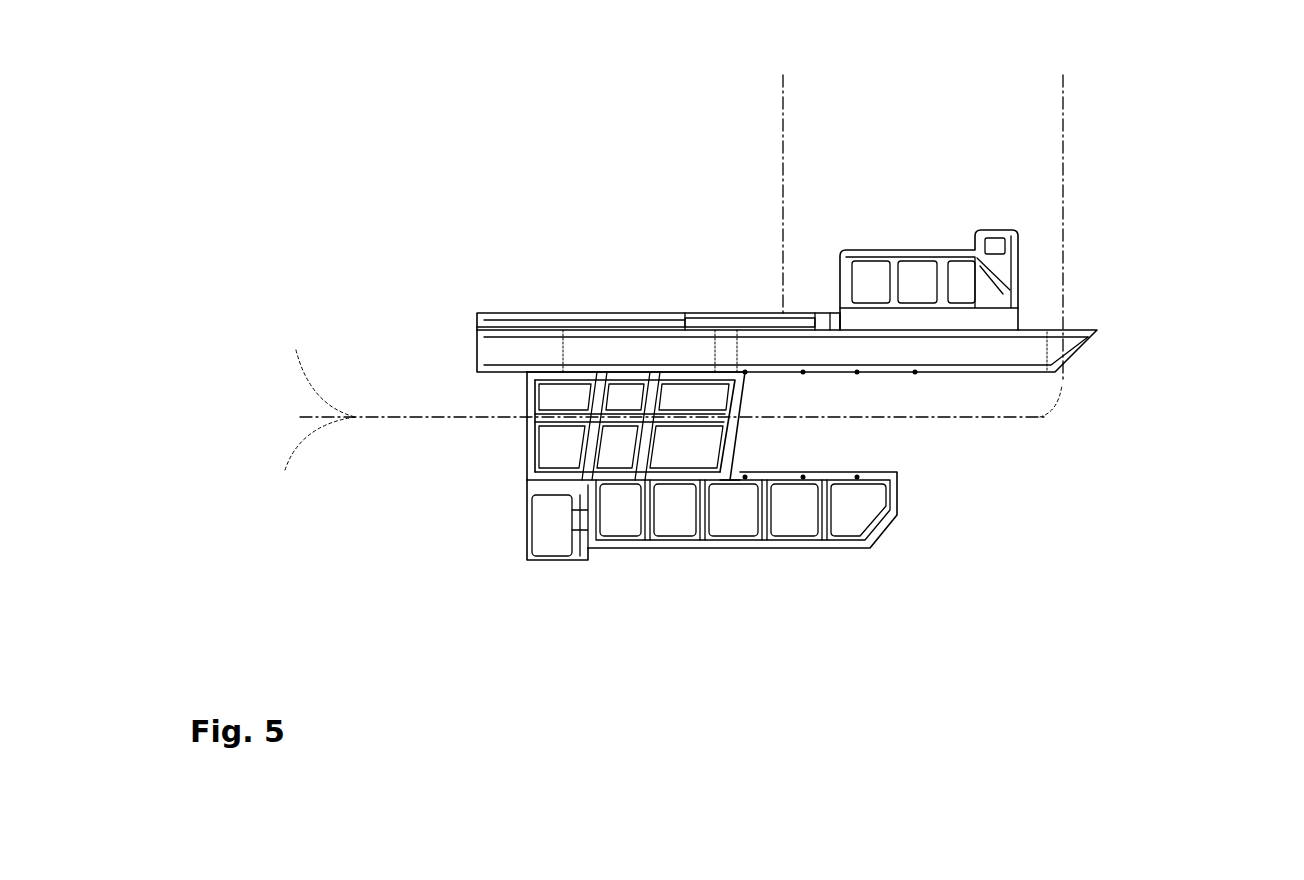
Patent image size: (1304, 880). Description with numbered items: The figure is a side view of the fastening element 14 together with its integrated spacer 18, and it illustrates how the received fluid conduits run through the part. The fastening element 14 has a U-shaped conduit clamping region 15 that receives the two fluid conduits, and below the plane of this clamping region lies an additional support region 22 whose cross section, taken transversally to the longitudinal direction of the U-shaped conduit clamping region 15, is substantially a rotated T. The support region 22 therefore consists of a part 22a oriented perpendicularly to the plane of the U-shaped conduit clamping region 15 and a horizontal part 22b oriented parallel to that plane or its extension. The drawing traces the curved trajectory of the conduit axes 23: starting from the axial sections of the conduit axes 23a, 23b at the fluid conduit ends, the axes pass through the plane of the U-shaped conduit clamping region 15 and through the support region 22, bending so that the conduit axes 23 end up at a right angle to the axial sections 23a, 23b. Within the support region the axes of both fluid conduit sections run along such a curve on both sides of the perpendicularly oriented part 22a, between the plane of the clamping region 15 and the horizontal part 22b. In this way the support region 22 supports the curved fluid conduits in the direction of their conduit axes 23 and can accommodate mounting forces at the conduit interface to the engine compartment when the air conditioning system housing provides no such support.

The fastening element 14 is at (779, 388).
The U-shaped conduit clamping region 15 is at (967, 367).
The integrated spacer 18 is at (985, 280).
The support region 22 is at (673, 465).
The perpendicularly oriented part 22a is at (558, 445).
The horizontal part 22b is at (612, 485).
The conduit axis 23 is at (458, 414).
The axial section of the conduit axis at the fluid conduit end 23a is at (788, 208).
The axial section of the conduit axis at the fluid conduit end 23b is at (1059, 220).